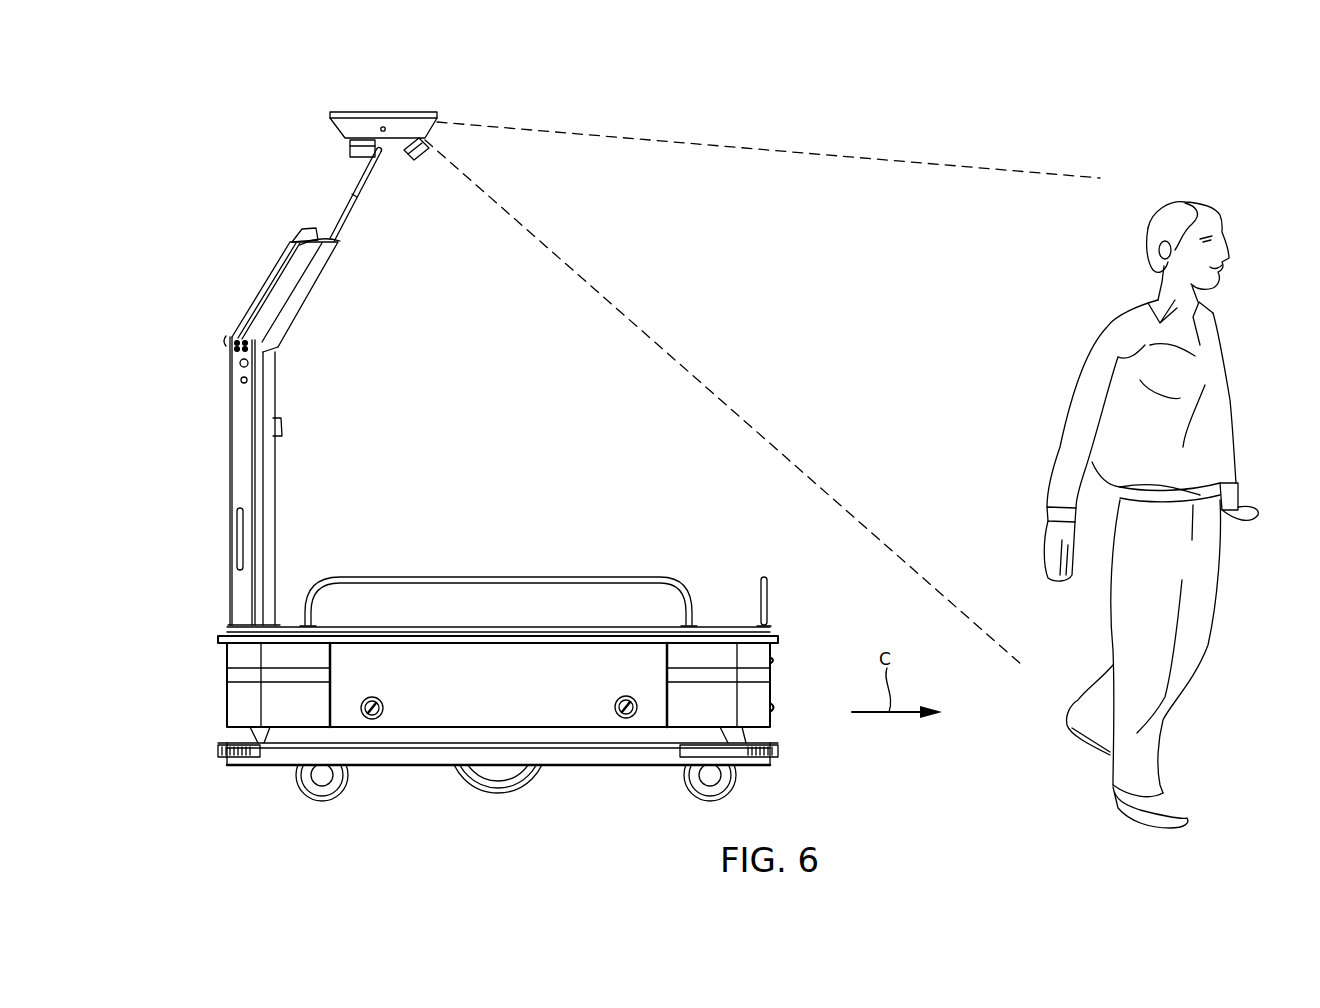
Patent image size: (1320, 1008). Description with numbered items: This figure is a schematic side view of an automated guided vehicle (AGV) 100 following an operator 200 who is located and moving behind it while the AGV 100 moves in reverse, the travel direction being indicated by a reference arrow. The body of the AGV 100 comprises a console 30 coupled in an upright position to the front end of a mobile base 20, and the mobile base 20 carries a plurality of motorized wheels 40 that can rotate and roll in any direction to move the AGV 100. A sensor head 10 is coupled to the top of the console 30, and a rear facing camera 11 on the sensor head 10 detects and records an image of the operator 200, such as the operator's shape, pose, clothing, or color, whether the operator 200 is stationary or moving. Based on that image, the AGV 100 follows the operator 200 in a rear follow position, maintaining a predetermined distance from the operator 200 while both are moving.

The sensor head 10 is at (372, 110).
The rear facing camera 11 is at (440, 126).
The mobile base 20 is at (242, 705).
The console 30 is at (242, 478).
The motorized wheels 40 is at (466, 785).
The automated guided vehicle (AGV) 100 is at (240, 194).
The operator 200 is at (1100, 345).